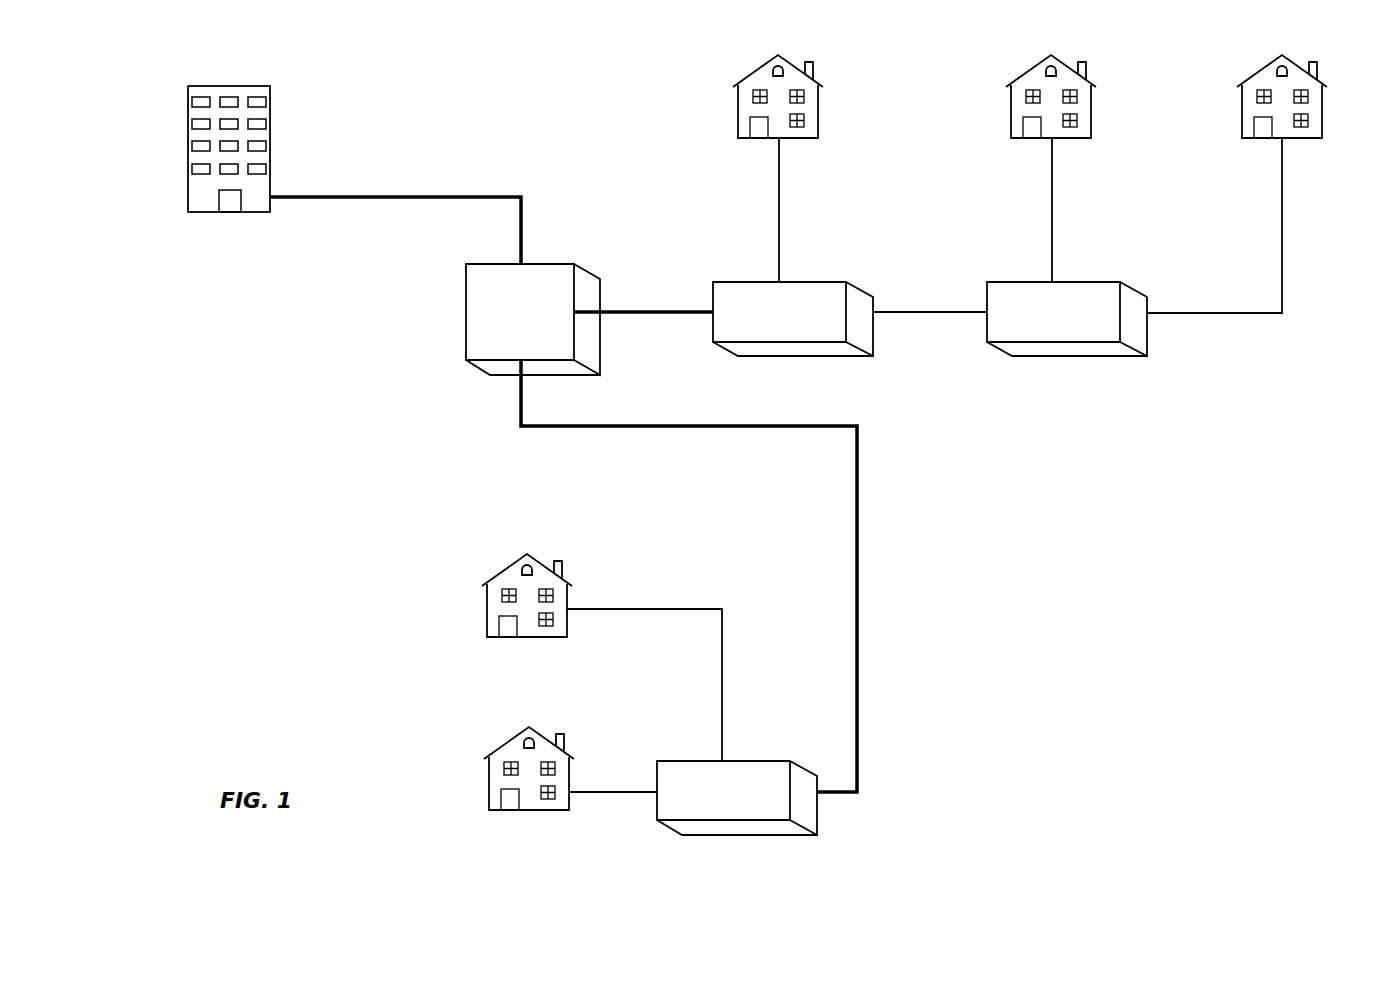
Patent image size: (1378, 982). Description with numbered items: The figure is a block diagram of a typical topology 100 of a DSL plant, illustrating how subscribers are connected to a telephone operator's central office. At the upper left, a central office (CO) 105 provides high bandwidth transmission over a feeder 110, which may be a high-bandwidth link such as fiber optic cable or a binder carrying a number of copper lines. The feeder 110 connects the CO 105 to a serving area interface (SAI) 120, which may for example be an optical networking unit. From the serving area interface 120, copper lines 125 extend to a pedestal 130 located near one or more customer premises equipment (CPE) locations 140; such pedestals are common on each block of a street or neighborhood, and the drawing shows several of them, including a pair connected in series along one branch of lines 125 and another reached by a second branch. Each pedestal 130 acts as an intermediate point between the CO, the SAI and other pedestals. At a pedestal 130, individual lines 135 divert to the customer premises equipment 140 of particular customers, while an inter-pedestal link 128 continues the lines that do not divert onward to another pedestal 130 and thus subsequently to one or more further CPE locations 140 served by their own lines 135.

The topology 100 is at (1091, 758).
The central office (CO) 105 is at (270, 122).
The feeder 110 is at (458, 197).
The serving area interface (SAI) 120 is at (466, 306).
The copper lines 125 is at (650, 316).
The inter-pedestal link 128 is at (927, 316).
The pedestal 130 is at (838, 282).
The line(s) of a customer 135 is at (779, 206).
The customer premises equipment (CPE) location 140 is at (738, 109).